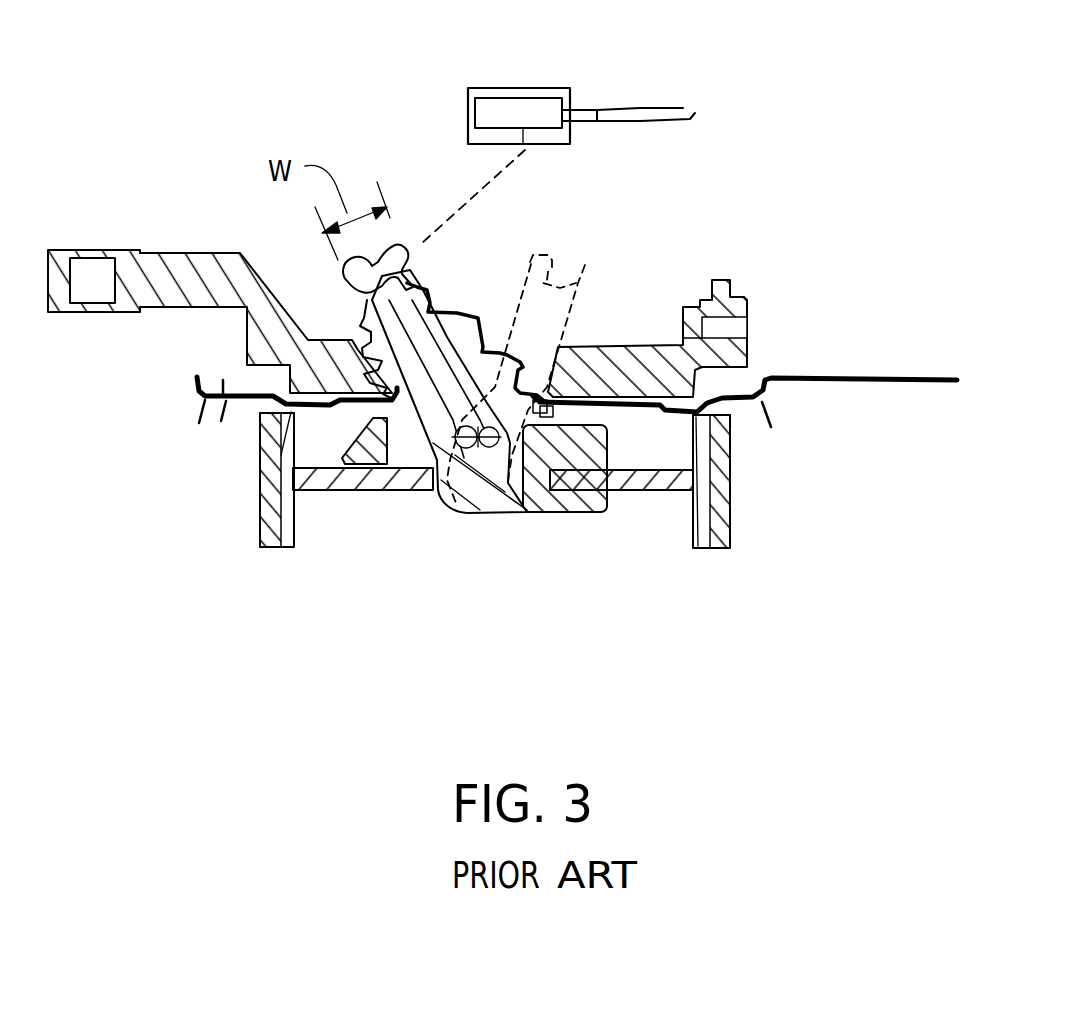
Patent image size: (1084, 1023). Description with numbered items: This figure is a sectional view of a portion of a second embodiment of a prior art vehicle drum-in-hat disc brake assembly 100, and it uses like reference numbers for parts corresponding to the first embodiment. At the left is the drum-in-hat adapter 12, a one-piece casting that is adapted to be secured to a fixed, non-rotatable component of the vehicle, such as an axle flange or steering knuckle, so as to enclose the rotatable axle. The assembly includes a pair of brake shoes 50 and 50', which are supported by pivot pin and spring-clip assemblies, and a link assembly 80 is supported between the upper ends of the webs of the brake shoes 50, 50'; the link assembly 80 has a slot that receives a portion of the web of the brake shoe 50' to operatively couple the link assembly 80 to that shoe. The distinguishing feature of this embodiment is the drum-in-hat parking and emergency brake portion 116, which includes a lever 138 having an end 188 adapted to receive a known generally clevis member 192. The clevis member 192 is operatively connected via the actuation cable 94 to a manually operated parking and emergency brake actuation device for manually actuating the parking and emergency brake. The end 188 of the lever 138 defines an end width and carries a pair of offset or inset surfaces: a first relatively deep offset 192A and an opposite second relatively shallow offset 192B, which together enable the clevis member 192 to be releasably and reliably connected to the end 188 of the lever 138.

The drum-in-hat adapter 12 is at (238, 322).
The brake shoe 50 is at (265, 519).
The brake shoe 50' is at (732, 518).
The link assembly 80 is at (573, 516).
The actuation cable 94 is at (638, 108).
The vehicle drum-in-hat disc brake assembly 100 is at (390, 565).
The drum-in-hat parking and emergency brake portion 116 is at (470, 556).
The lever 138 is at (448, 333).
The end of the lever 188 is at (372, 243).
The clevis member 192 is at (532, 88).
The first relatively deep offset 192A is at (367, 288).
The second relatively shallow offset 192B is at (413, 256).